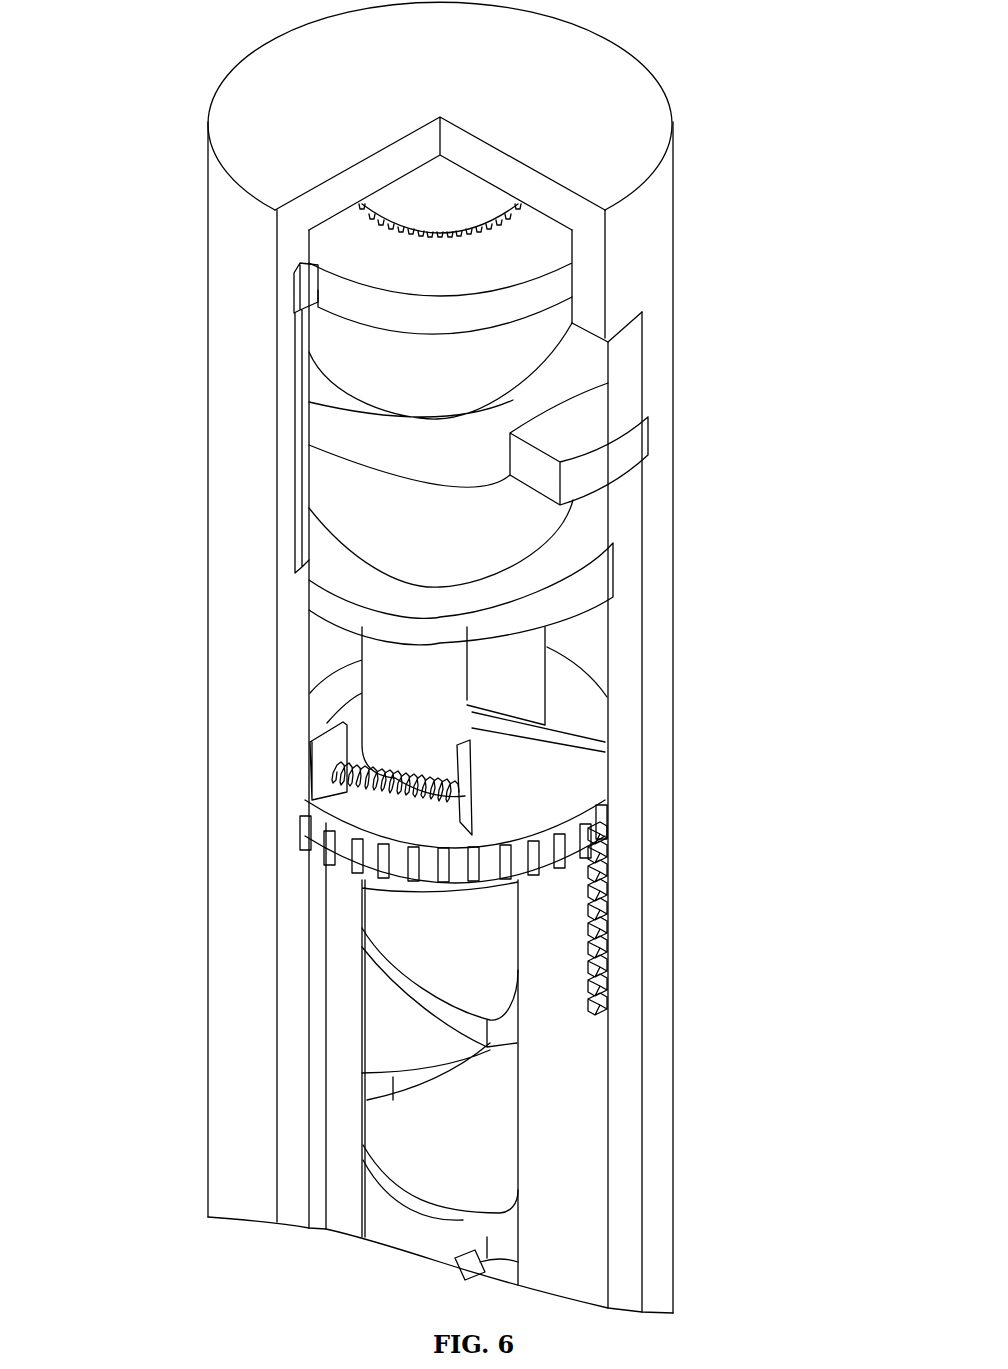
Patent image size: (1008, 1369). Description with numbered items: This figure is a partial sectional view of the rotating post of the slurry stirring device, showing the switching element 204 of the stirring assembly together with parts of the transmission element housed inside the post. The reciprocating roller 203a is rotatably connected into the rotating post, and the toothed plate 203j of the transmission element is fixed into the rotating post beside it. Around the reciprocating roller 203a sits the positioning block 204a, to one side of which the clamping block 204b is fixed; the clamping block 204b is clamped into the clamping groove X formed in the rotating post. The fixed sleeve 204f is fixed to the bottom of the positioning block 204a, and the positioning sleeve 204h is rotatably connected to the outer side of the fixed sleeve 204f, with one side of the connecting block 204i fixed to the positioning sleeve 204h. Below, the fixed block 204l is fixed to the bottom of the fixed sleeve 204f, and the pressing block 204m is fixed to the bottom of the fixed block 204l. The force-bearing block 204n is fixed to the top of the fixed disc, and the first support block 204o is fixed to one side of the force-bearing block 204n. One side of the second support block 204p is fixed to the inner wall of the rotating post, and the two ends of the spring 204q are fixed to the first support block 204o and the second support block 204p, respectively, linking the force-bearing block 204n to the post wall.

The switching element 204 is at (724, 815).
The positioning block 204a is at (528, 229).
The clamping block 204b is at (330, 288).
The positioning sleeve 204h is at (572, 377).
The connecting block 204i is at (590, 437).
The fixed sleeve 204f is at (480, 535).
The fixed block 204l is at (515, 600).
The pressing block 204m is at (515, 680).
The force-bearing block 204n is at (542, 767).
The second support block 204p is at (330, 750).
The spring 204q is at (350, 787).
The first support block 204o is at (345, 840).
The toothed plate 203j is at (587, 983).
The reciprocating roller 203a is at (455, 1118).
The clamping groove X is at (300, 420).